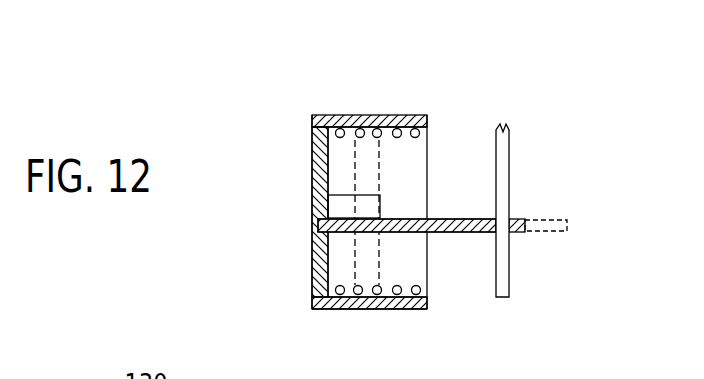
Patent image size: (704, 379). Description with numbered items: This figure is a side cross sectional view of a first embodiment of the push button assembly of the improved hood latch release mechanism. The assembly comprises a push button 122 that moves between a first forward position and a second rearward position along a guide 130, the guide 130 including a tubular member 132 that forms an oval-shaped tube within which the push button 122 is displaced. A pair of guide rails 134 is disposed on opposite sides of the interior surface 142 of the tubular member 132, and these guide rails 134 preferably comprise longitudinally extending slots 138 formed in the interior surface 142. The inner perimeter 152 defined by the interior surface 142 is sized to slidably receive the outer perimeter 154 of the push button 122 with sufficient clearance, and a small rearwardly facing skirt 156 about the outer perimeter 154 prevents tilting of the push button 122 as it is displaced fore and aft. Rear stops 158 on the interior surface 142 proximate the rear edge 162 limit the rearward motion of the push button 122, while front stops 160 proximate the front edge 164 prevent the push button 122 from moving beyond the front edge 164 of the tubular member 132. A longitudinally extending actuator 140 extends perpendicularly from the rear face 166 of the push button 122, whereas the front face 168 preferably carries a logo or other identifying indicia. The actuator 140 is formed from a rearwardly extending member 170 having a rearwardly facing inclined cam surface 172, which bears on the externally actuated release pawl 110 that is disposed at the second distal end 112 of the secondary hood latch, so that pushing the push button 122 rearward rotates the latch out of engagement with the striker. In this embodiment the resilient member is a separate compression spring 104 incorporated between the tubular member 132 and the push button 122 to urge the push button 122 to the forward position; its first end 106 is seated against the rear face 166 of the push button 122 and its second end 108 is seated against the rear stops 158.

The compression spring 104 is at (400, 128).
The first end of compression spring 106 is at (346, 290).
The second end of compression spring 108 is at (418, 137).
The externally actuated release pawl 110 is at (505, 283).
The second distal end 112 is at (507, 143).
The push button 122 is at (312, 199).
The guide 130 is at (365, 302).
The tubular member 132 is at (345, 125).
The guide rails 134 is at (343, 210).
The longitudinally extending slots 138 is at (366, 214).
The longitudinally extending actuator 140 is at (415, 233).
The interior surface 142 is at (351, 293).
The inner perimeter 152 is at (407, 293).
The outer perimeter 154 is at (311, 119).
The rearwardly facing skirt 156 is at (333, 128).
The rear stops 158 is at (430, 299).
The front stops 160 is at (312, 298).
The rear edge 162 is at (428, 125).
The front edge 164 is at (310, 122).
The rear face 166 is at (336, 166).
The front face 168 is at (312, 152).
The rearwardly extending member 170 is at (380, 230).
The inclined cam surface 172 is at (481, 233).